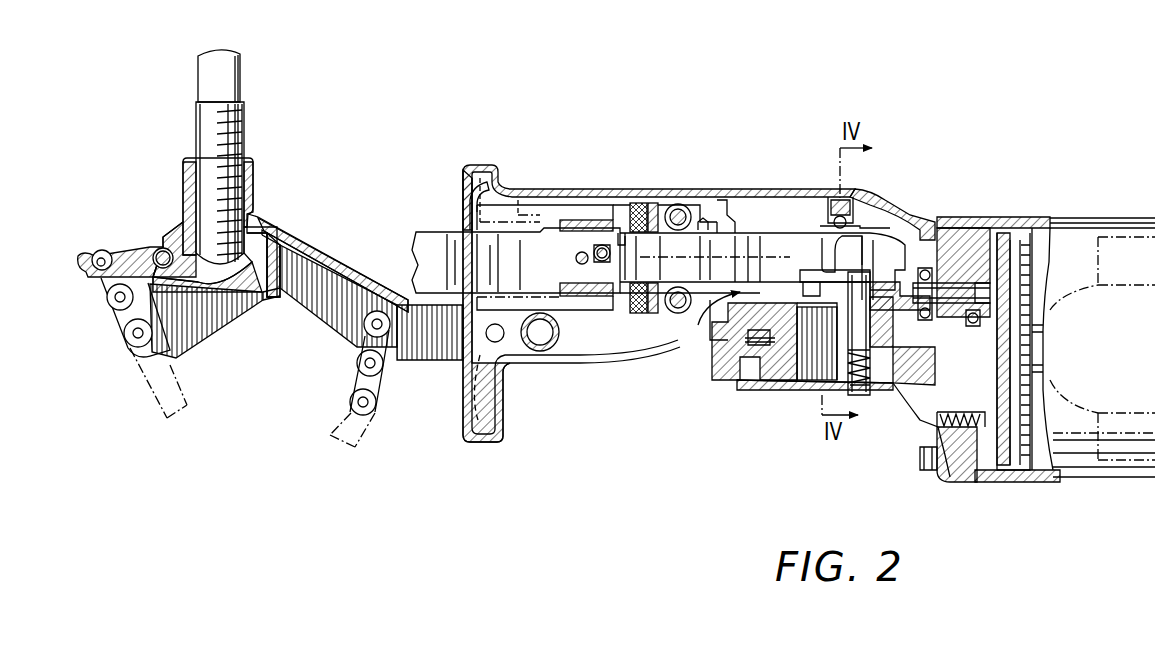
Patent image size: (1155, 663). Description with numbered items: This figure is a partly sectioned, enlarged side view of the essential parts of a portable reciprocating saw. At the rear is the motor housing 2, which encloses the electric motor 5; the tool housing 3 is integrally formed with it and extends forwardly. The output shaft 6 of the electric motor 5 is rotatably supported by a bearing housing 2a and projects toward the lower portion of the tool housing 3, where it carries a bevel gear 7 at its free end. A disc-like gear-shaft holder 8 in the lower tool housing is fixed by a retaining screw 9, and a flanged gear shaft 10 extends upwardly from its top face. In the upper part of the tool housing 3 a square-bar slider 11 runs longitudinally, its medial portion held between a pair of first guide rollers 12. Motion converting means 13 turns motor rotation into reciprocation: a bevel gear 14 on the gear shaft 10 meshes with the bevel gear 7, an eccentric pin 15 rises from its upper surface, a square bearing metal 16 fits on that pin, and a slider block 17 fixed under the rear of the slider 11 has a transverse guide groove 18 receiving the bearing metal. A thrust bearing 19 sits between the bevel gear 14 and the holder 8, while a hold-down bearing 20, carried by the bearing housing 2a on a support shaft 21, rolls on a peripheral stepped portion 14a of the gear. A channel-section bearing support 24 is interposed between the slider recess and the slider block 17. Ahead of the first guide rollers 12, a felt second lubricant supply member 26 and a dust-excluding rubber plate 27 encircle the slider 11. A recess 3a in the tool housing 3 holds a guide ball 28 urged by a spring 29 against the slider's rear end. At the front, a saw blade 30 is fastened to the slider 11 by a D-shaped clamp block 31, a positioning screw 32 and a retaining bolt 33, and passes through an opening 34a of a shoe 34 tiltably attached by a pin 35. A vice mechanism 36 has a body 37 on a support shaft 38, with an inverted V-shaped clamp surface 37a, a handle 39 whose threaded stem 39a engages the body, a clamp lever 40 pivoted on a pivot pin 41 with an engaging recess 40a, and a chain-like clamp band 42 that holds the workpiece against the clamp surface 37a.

The motor housing 2 is at (1018, 476).
The bearing housing 2a is at (968, 445).
The tool housing 3 is at (716, 215).
The recess 3a is at (835, 216).
The electric motor 5 is at (1075, 300).
The output shaft 6 is at (1026, 298).
The bevel gear 7 is at (905, 370).
The gear-shaft holder 8 is at (762, 350).
The retaining screw 9 is at (860, 386).
The gear shaft 10 is at (815, 360).
The slider 11 is at (748, 232).
The first guide rollers 12 is at (680, 204).
The motion converting means 13 is at (700, 325).
The bevel gear 14 is at (738, 365).
The peripheral stepped portion 14a is at (732, 310).
The eccentric pin 15 is at (864, 298).
The square bearing metal 16 is at (882, 290).
The slider block 17 is at (910, 285).
The guide groove 18 is at (808, 266).
The thrust bearing 19 is at (758, 346).
The hold-down bearing 20 is at (952, 230).
The support shaft 21 is at (968, 290).
The bearing support 24 is at (822, 246).
The second lubricant supply member 26 is at (637, 203).
The rubber plate 27 is at (651, 203).
The guide ball 28 is at (830, 212).
The spring 29 is at (838, 216).
The saw blade 30 is at (420, 236).
The clamp block 31 is at (580, 210).
The positioning screw 32 is at (582, 264).
The retaining bolt 33 is at (603, 262).
The shoe 34 is at (462, 392).
The opening 34a is at (462, 212).
The pin 35 is at (498, 342).
The vice mechanism 36 is at (258, 210).
The body 37 is at (326, 258).
The clamp surface 37a is at (315, 320).
The support shaft 38 is at (544, 345).
The handle 39 is at (241, 78).
The threaded stem 39a is at (247, 122).
The clamp lever 40 is at (212, 290).
The engaging recess 40a is at (118, 248).
The pivot pin 41 is at (158, 250).
The clamp band 42 is at (350, 400).